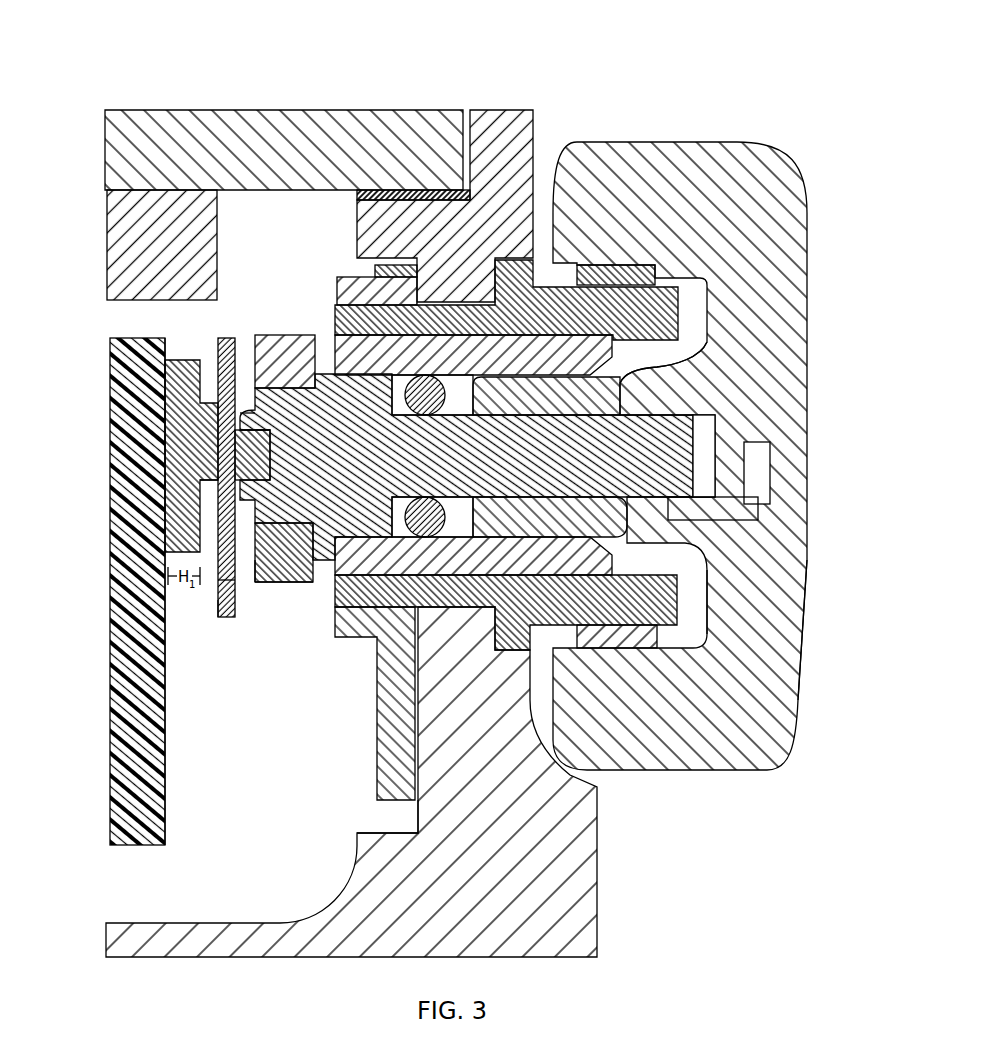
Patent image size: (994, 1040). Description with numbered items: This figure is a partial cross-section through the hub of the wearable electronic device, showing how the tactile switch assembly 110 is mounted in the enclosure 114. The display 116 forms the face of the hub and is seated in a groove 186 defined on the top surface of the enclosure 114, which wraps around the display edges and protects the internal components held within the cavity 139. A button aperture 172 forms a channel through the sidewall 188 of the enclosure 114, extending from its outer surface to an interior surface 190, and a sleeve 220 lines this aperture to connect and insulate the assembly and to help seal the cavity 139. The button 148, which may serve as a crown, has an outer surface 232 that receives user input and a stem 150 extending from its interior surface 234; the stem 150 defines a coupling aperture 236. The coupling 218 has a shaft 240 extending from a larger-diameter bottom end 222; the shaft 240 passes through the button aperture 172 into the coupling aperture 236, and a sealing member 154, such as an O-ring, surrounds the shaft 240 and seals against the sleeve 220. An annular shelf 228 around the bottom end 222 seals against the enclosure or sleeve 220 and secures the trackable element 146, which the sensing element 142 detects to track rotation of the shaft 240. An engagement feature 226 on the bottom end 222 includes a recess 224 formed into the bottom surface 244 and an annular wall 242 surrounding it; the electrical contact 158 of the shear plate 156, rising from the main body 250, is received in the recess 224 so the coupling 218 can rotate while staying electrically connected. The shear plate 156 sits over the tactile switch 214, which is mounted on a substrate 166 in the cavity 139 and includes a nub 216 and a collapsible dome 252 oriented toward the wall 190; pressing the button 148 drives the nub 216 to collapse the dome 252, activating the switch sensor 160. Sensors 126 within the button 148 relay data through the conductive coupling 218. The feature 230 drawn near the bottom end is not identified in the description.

The tactile switch assembly 110 is at (737, 84).
The enclosure 114 is at (524, 157).
The display 116 is at (413, 128).
The sensor 126 is at (764, 486).
The cavity 139 is at (272, 873).
The sensing element 142 is at (217, 290).
The trackable element 146 is at (292, 336).
The button 148 is at (780, 733).
The stem 150 is at (620, 385).
The sealing member 154 is at (340, 346).
The shear plate 156 is at (222, 588).
The electrical contact 158 is at (248, 468).
The switch sensor 160 is at (211, 346).
The substrate 166 is at (128, 340).
The button aperture 172 is at (522, 636).
The groove 186 is at (469, 148).
The sidewall 188 is at (362, 290).
The interior surface 190 is at (416, 805).
The tactile switch 214 is at (163, 502).
The nub 216 is at (210, 479).
The coupling 218 is at (625, 497).
The sleeve 220 is at (472, 315).
The bottom end 222 is at (343, 637).
The recess 224 is at (268, 432).
The engagement feature 226 is at (243, 413).
The annular shelf 228 is at (322, 553).
The ring lower surface 230 is at (290, 572).
The outer surface 232 is at (816, 588).
The interior surface 234 is at (700, 600).
The coupling aperture 236 is at (703, 420).
The shaft 240 is at (650, 430).
The annular wall 242 is at (218, 598).
The bottom surface 244 is at (272, 552).
The main body 250 is at (232, 618).
The collapsible dome 252 is at (182, 360).